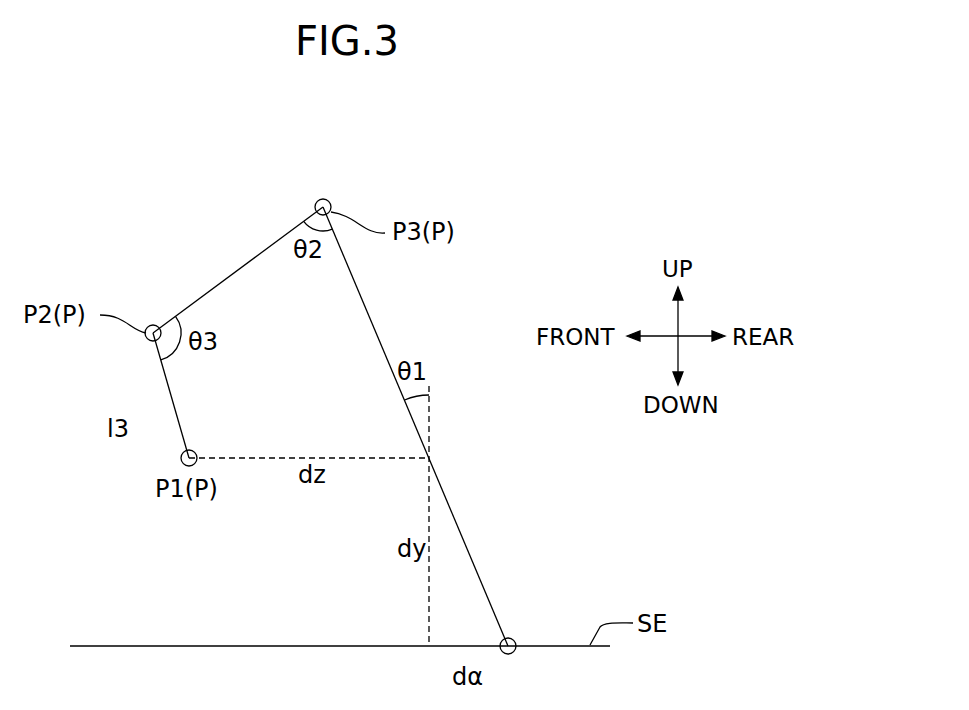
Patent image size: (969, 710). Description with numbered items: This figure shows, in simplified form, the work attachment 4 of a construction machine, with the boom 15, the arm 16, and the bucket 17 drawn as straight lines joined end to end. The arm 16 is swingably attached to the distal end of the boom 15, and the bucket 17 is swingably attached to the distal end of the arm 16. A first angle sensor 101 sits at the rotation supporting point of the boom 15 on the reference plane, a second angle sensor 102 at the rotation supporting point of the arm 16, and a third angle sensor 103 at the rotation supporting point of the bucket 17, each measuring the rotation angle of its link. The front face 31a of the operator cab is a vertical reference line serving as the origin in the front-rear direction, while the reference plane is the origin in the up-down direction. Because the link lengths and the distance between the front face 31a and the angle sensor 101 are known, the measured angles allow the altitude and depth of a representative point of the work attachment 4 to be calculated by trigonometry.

The work attachment 4 is at (330, 369).
The boom 15 is at (377, 333).
The arm 16 is at (237, 270).
The bucket 17 is at (173, 400).
The front face 31a is at (432, 417).
The first angle sensor 101 is at (534, 632).
The second angle sensor 102 is at (350, 198).
The third angle sensor 103 is at (156, 314).